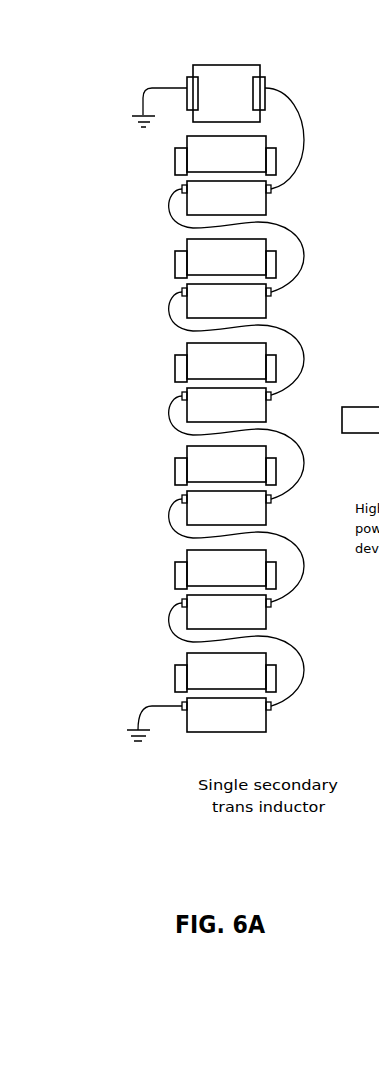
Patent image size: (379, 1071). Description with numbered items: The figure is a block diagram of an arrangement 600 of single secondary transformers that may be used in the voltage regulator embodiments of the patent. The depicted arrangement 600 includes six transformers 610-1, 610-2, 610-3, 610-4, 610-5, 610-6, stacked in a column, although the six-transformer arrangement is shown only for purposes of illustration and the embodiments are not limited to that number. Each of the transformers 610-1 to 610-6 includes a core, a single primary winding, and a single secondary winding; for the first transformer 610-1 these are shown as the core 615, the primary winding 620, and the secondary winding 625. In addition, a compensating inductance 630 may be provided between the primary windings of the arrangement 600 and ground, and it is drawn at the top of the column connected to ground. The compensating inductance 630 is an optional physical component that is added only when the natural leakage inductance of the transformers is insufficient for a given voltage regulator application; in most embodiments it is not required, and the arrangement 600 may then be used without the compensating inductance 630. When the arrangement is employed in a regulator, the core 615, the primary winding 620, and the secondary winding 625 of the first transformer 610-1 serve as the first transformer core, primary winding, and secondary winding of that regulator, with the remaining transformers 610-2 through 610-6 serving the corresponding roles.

The arrangement 600 is at (235, 865).
The transformer 610-1 is at (216, 166).
The transformer 610-2 is at (140, 278).
The transformer 610-3 is at (140, 382).
The transformer 610-4 is at (140, 485).
The transformer 610-5 is at (140, 589).
The transformer 610-6 is at (140, 692).
The core 615 is at (265, 125).
The primary winding 620 is at (271, 191).
The secondary winding 625 is at (272, 146).
The compensating inductance 630 is at (208, 65).